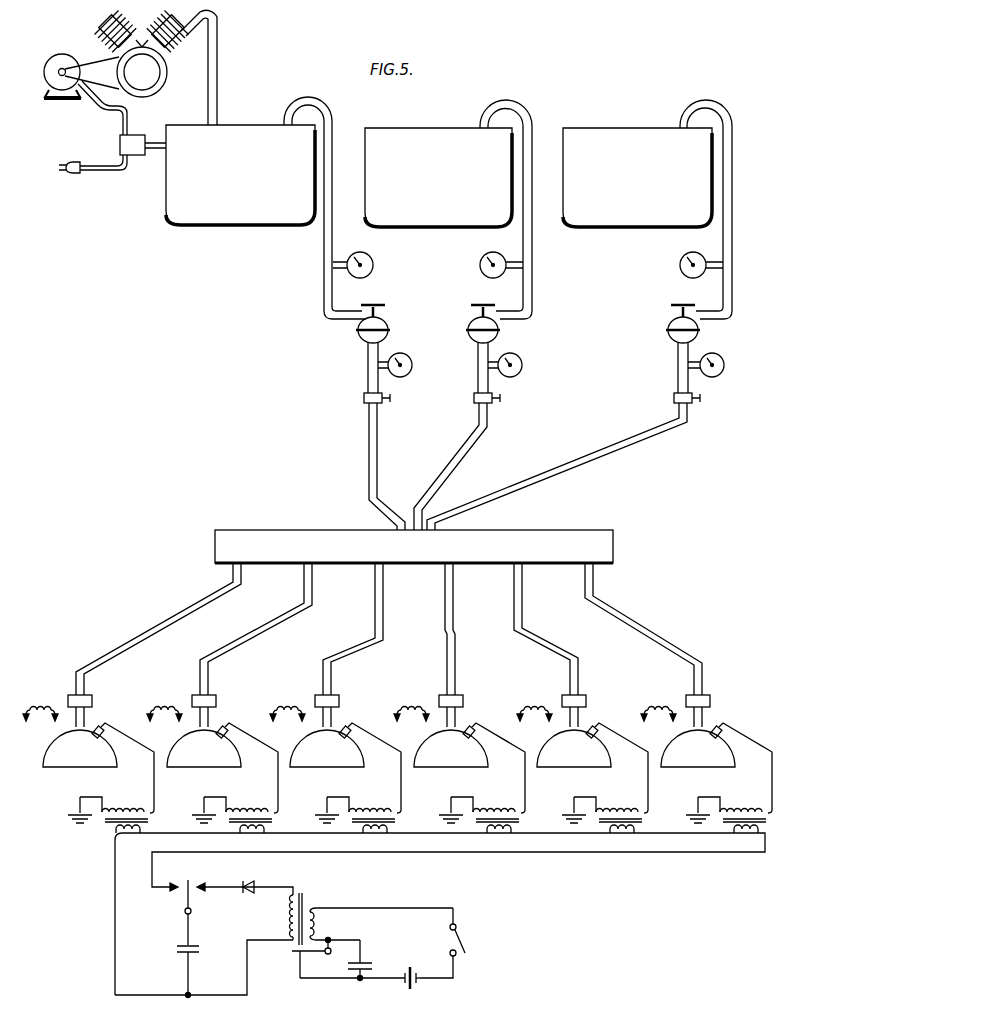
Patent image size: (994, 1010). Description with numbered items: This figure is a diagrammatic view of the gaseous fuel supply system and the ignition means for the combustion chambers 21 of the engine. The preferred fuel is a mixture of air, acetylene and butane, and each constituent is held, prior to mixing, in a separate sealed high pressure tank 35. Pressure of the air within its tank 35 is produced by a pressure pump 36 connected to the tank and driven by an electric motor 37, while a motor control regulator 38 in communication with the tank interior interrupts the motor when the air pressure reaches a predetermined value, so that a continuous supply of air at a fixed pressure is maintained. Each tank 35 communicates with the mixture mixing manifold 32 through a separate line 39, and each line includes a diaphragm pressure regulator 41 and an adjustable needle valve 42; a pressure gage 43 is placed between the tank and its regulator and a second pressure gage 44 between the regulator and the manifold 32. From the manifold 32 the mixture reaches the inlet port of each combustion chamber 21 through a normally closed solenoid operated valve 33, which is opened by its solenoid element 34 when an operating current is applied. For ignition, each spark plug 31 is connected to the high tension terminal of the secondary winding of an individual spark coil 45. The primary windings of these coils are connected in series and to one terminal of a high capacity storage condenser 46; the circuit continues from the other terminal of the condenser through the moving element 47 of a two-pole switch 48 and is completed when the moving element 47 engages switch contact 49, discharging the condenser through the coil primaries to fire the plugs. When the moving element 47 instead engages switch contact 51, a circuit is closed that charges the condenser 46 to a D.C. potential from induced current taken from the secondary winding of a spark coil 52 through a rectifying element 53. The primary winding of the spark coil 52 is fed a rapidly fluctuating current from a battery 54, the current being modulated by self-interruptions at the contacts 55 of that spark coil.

The combustion chamber 21 is at (68, 760).
The spark plug 31 is at (101, 724).
The mixture mixing manifold 32 is at (272, 529).
The solenoid operated valve 33 is at (91, 696).
The solenoid element 34 is at (40, 698).
The tank 35 is at (230, 211).
The pressure pump 36 is at (134, 33).
The electric motor 37 is at (58, 56).
The motor control regulator 38 is at (136, 139).
The line 39 is at (320, 298).
The diaphragm pressure regulator 41 is at (470, 322).
The adjustable needle valve 42 is at (364, 398).
The pressure gage 43 is at (481, 262).
The second pressure gage 44 is at (402, 377).
The spark coil 45 is at (154, 820).
The high capacity storage condenser 46 is at (196, 954).
The moving element 47 is at (185, 910).
The two-pole switch 48 is at (194, 879).
The switch contact 49 is at (174, 889).
The switch contact 51 is at (203, 891).
The spark coil 52 is at (307, 897).
The rectifying element 53 is at (249, 884).
The battery 54 is at (414, 987).
The contacts 55 is at (300, 960).